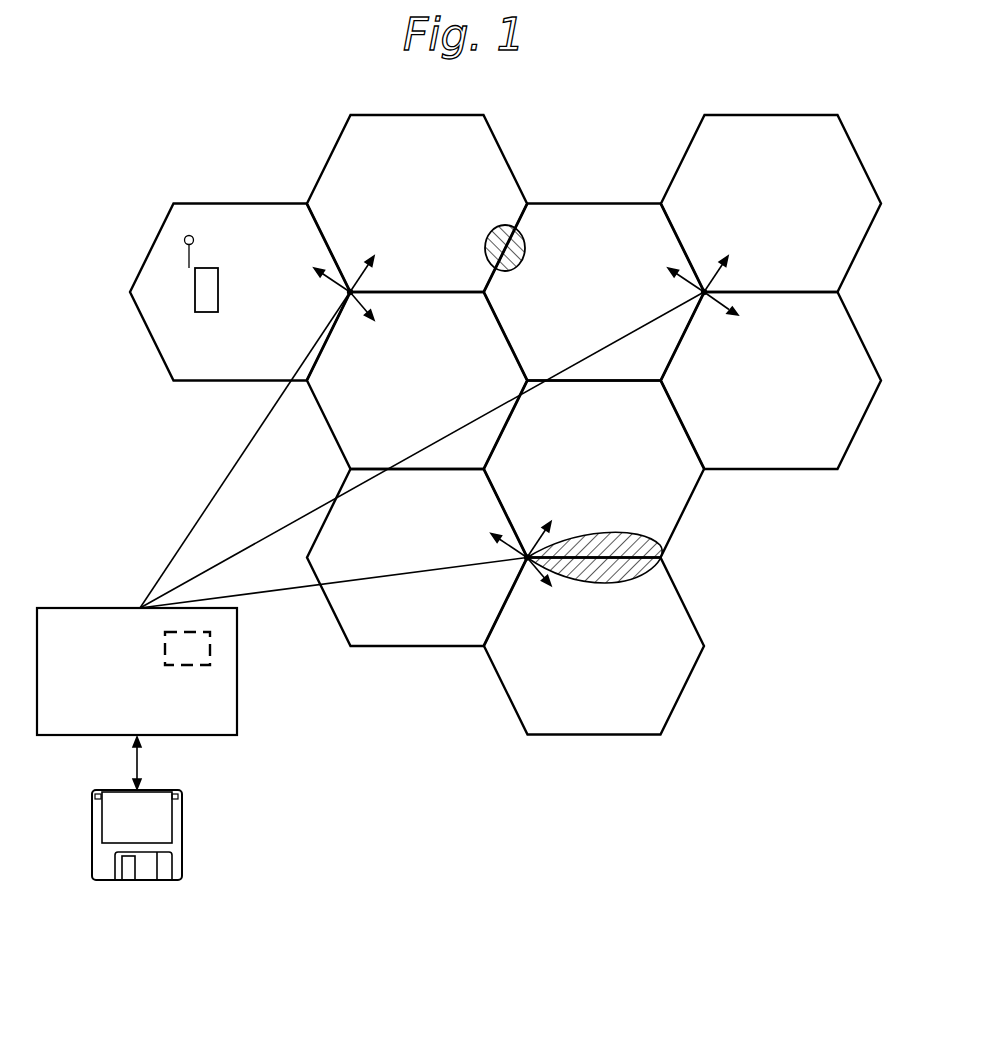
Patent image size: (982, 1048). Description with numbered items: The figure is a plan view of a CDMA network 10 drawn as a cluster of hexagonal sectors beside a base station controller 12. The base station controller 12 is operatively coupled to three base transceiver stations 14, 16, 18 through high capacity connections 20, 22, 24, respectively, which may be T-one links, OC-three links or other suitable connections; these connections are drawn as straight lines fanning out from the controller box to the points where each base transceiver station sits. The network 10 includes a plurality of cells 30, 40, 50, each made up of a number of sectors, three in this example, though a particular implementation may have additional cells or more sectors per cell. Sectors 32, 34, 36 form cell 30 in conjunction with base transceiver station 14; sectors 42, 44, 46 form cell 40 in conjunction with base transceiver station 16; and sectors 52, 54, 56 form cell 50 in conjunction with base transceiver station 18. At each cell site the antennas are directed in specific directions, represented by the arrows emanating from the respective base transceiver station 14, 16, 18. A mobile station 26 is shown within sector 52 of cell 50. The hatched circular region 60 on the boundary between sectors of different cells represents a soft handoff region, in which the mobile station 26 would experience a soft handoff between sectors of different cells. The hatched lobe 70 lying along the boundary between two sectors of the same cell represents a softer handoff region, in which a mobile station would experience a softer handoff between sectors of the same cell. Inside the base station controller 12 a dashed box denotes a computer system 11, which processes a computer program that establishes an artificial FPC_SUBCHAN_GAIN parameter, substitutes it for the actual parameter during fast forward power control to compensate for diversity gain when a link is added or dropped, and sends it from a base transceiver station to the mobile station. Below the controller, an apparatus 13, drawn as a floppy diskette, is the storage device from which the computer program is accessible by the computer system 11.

The CDMA network 10 is at (130, 145).
The computer system 11 is at (187, 666).
The base station controller 12 is at (70, 607).
The apparatus 13 is at (92, 832).
The base transceiver station 14 is at (526, 562).
The base transceiver station 16 is at (704, 296).
The base transceiver station 18 is at (350, 296).
The high capacity connection 20 is at (413, 572).
The high capacity connection 22 is at (283, 527).
The high capacity connection 24 is at (210, 498).
The mobile station 26 is at (218, 292).
The cell 30 is at (673, 688).
The sector 32 is at (431, 554).
The sector 34 is at (609, 484).
The sector 36 is at (609, 660).
The cell 40 is at (775, 122).
The sector 42 is at (609, 307).
The sector 44 is at (787, 221).
The sector 46 is at (787, 396).
The cell 50 is at (240, 207).
The sector 52 is at (299, 341).
The sector 54 is at (433, 217).
The sector 56 is at (433, 393).
The soft handoff region 60 is at (512, 225).
The softer handoff region 70 is at (647, 534).